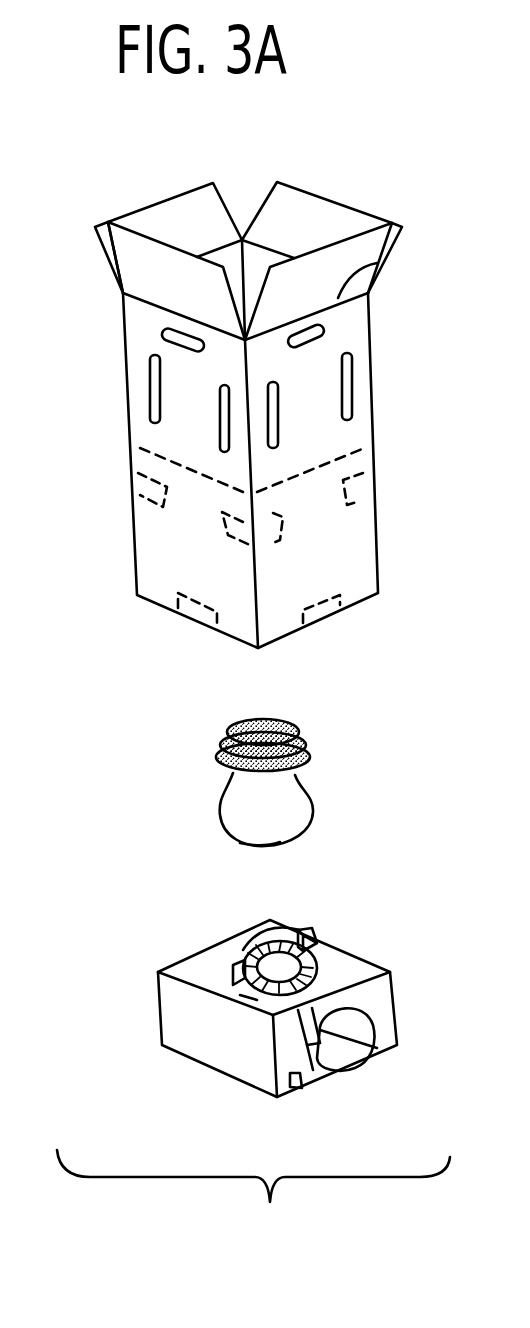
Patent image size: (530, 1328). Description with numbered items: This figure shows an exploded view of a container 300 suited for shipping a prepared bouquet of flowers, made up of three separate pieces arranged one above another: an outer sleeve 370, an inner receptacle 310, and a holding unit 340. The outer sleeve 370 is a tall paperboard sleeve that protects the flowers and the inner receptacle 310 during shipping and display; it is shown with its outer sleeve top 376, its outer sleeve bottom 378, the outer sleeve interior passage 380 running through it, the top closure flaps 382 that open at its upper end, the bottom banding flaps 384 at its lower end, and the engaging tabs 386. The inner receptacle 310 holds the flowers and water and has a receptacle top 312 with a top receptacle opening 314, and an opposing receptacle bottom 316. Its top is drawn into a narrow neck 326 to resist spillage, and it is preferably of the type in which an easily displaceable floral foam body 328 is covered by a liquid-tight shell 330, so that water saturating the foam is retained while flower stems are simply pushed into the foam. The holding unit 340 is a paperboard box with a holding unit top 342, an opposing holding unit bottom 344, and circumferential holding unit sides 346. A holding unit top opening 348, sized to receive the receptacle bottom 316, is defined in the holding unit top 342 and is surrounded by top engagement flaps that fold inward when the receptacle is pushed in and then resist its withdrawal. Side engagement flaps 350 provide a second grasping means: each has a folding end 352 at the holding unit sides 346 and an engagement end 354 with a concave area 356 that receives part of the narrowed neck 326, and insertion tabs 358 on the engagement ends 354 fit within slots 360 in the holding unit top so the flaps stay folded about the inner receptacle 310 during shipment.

The container 300 is at (253, 1201).
The inner receptacle 310 is at (259, 784).
The receptacle top 312 is at (283, 740).
The top receptacle opening 314 is at (270, 723).
The receptacle bottom 316 is at (257, 847).
The narrow neck 326 is at (293, 777).
The floral foam body 328 is at (307, 732).
The liquid-tight shell 330 is at (297, 815).
The holding unit 340 is at (273, 1020).
The holding unit top 342 is at (180, 965).
The holding unit bottom 344 is at (177, 1057).
The holding unit sides 346 is at (242, 1053).
The holding unit top opening 348 is at (285, 996).
The side engagement flaps 350 is at (397, 993).
The folding ends 352 is at (380, 1007).
The engagement ends 354 is at (353, 1072).
The concave area 356 is at (377, 1050).
The insertion tabs 358 is at (297, 1090).
The slots 360 is at (341, 961).
The outer sleeve 370 is at (357, 337).
The outer sleeve top 376 is at (377, 266).
The outer sleeve bottom 378 is at (355, 607).
The outer sleeve interior passage 380 is at (260, 265).
The top closure flaps 382 is at (193, 207).
The bottom banding flaps 384 is at (305, 612).
The engaging tabs 386 is at (345, 456).